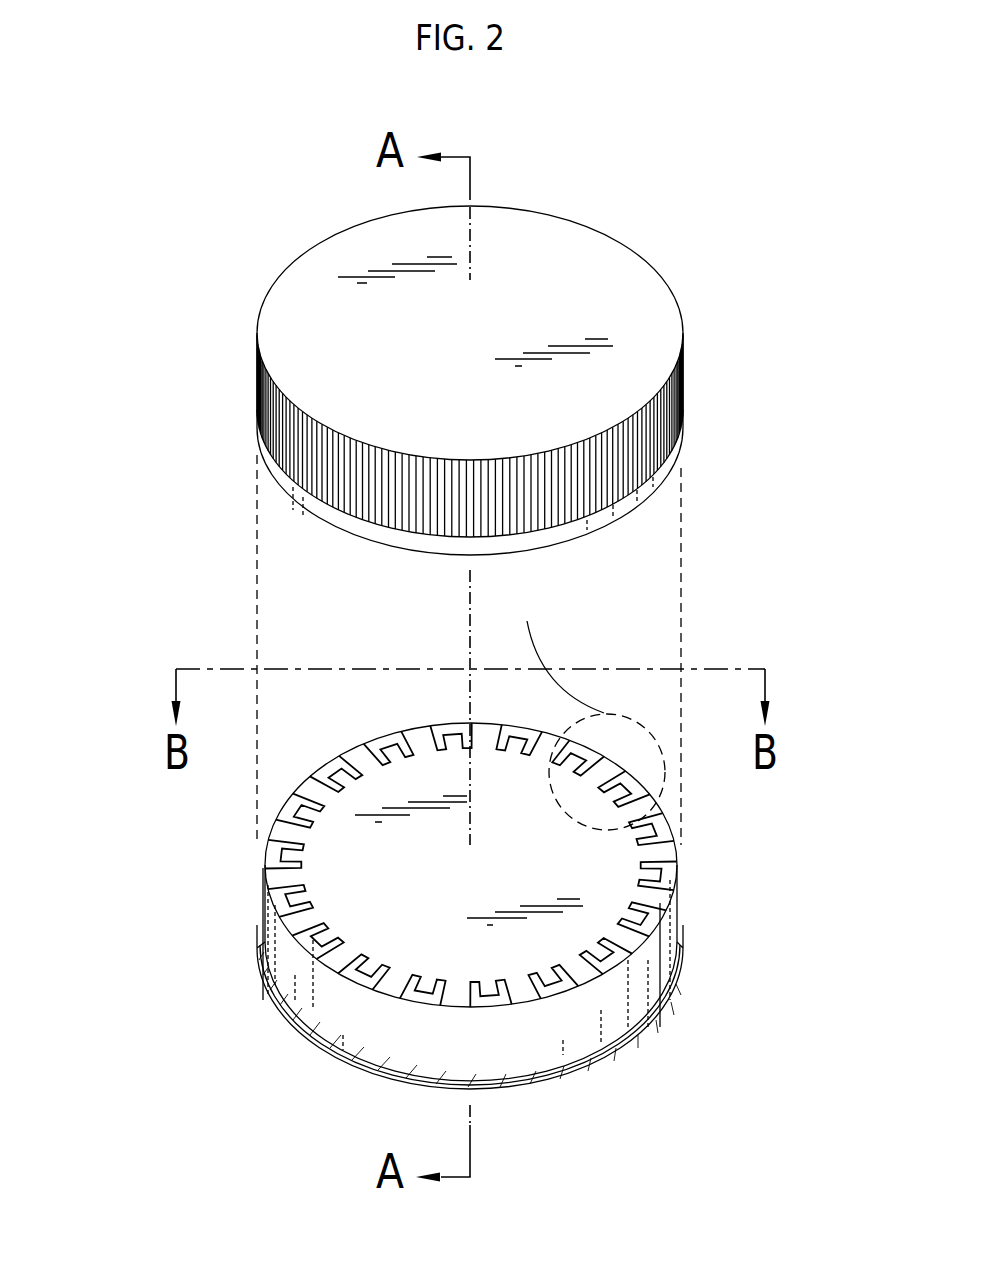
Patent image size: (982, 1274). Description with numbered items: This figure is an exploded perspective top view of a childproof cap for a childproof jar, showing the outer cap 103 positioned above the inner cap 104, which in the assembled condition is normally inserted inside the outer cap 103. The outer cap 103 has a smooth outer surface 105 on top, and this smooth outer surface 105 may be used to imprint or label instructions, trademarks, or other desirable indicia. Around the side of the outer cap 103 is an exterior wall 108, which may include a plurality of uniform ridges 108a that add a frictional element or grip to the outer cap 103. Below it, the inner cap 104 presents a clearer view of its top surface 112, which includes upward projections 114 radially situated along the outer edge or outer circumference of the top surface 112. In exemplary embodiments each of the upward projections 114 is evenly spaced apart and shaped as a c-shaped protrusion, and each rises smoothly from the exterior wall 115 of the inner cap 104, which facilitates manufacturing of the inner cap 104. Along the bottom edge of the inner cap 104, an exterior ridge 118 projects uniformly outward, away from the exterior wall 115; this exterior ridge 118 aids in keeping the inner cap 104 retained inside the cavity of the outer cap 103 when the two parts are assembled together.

The outer cap 103 is at (232, 445).
The inner cap 104 is at (205, 1025).
The smooth outer surface 105 is at (287, 313).
The exterior wall 108 is at (672, 466).
The uniform ridges 108a is at (683, 400).
The top surface 112 is at (358, 750).
The upward projections 114 is at (668, 877).
The exterior wall 115 is at (610, 1022).
The exterior ridge 118 is at (258, 943).